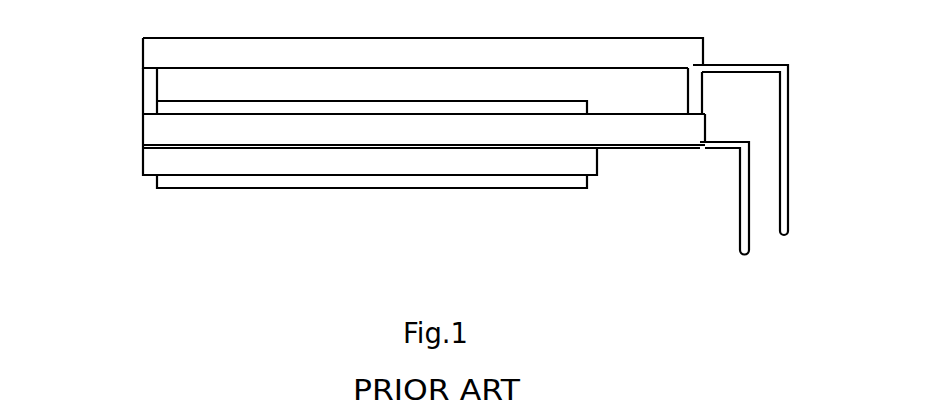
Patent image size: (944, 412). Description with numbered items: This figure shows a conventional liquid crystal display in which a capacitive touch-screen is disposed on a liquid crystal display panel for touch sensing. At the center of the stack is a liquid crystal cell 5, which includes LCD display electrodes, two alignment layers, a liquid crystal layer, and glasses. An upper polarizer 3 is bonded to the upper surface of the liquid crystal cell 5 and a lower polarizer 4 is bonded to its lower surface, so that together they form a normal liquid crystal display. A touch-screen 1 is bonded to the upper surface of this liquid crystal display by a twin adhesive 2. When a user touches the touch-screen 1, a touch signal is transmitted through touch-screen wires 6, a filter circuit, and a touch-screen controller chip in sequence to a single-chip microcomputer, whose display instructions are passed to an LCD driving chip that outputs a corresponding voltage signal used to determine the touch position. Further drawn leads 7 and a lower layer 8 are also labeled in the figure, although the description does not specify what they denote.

The touch-screen 1 is at (153, 62).
The twin adhesive 2 is at (152, 87).
The upper polarizer 3 is at (167, 108).
The lower polarizer 4 is at (402, 183).
The liquid crystal cell 5 is at (155, 130).
The touch-screen wires 6 is at (785, 160).
The second lead bracket 7 is at (742, 183).
The intermediate layer 8 is at (647, 148).